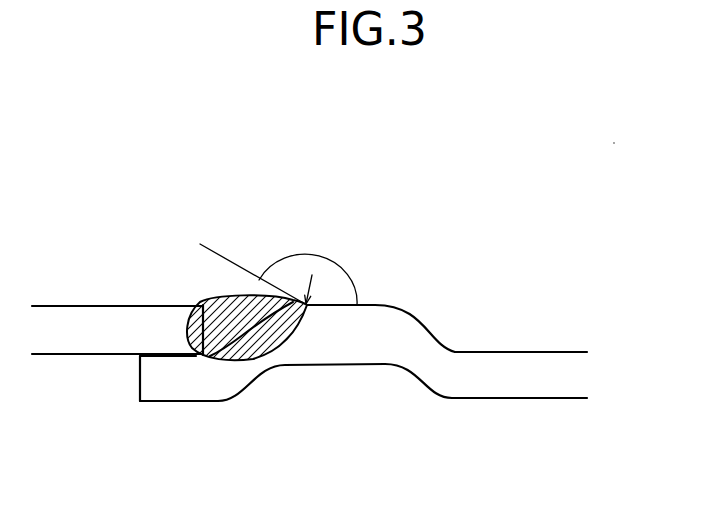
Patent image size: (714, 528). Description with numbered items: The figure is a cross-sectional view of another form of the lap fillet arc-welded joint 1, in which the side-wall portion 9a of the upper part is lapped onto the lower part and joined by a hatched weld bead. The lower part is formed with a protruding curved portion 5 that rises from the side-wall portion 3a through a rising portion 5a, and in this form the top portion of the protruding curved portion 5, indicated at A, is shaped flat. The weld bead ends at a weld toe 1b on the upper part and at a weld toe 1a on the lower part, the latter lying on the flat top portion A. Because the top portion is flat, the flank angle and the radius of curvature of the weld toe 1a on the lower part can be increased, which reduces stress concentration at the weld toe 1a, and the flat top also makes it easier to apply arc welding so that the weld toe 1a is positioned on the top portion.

The lap fillet arc-welded joint 1 is at (613, 142).
The weld toe 1a is at (340, 270).
The weld toe 1b is at (195, 305).
The side-wall portion 3a is at (555, 352).
The protruding curved portion 5 is at (373, 355).
The rising portion 5a is at (453, 350).
The side-wall portion 9a is at (43, 306).
The flat top portion A is at (373, 303).